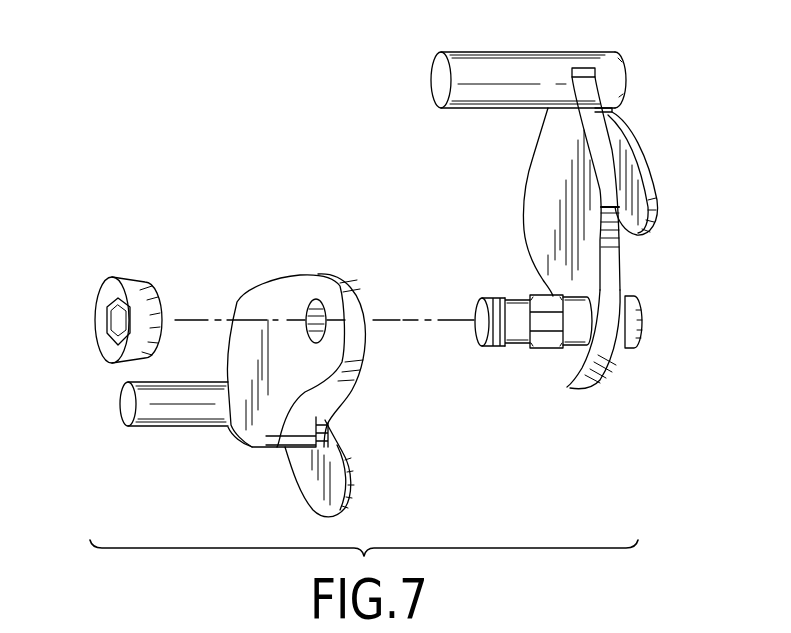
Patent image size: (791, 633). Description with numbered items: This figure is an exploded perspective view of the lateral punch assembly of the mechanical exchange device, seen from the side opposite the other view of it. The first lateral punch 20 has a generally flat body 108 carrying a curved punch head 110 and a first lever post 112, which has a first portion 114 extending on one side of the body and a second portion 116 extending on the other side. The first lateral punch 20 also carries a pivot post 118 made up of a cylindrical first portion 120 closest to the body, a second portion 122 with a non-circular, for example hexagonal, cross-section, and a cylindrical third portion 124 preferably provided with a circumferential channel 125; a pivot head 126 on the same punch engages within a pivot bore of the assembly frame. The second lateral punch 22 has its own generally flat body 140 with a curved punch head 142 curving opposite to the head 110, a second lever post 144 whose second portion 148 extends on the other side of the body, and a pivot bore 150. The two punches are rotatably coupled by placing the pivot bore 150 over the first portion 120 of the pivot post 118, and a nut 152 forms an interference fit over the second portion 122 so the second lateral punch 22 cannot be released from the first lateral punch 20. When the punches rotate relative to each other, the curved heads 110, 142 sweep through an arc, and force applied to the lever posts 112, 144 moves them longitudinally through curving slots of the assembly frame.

The first lateral punch 20 is at (537, 168).
The second lateral punch 22 is at (250, 297).
The body 108 is at (610, 263).
The curved punch head 110 is at (637, 165).
The first lever post 112 is at (573, 52).
The first portion of first lever post 114 is at (618, 75).
The second portion of first lever post 116 is at (477, 53).
The pivot post 118 is at (540, 293).
The first portion of pivot post 120 is at (586, 341).
The second portion of pivot post 122 is at (552, 348).
The third portion of pivot post 124 is at (520, 347).
The circumferential channel 125 is at (493, 350).
The pivot head 126 is at (643, 320).
The body 140 is at (250, 447).
The curved punch head 142 is at (313, 500).
The second lever post 144 is at (213, 427).
The second portion of second lever post 148 is at (142, 430).
The pivot bore 150 is at (318, 299).
The nut 152 is at (107, 282).